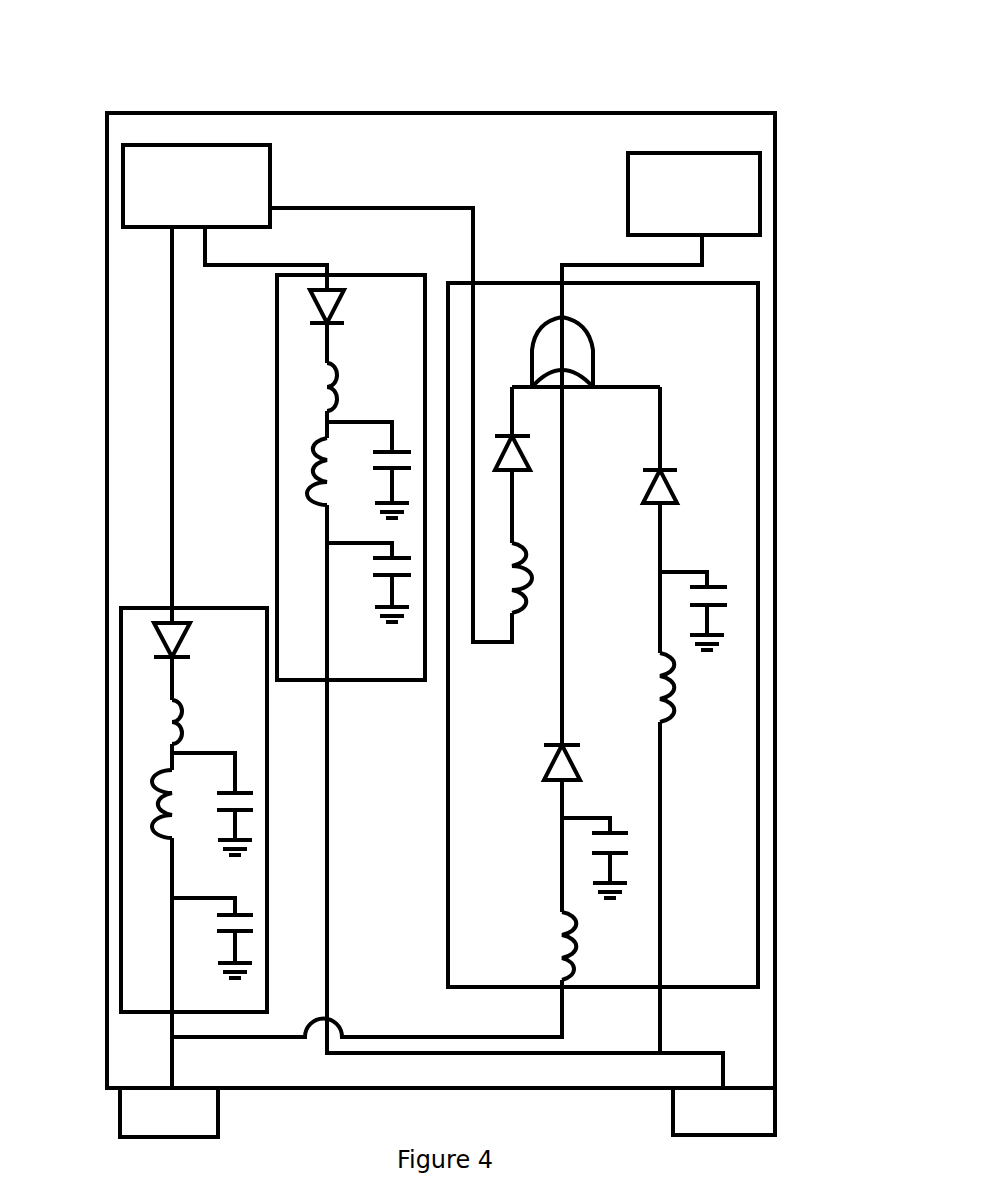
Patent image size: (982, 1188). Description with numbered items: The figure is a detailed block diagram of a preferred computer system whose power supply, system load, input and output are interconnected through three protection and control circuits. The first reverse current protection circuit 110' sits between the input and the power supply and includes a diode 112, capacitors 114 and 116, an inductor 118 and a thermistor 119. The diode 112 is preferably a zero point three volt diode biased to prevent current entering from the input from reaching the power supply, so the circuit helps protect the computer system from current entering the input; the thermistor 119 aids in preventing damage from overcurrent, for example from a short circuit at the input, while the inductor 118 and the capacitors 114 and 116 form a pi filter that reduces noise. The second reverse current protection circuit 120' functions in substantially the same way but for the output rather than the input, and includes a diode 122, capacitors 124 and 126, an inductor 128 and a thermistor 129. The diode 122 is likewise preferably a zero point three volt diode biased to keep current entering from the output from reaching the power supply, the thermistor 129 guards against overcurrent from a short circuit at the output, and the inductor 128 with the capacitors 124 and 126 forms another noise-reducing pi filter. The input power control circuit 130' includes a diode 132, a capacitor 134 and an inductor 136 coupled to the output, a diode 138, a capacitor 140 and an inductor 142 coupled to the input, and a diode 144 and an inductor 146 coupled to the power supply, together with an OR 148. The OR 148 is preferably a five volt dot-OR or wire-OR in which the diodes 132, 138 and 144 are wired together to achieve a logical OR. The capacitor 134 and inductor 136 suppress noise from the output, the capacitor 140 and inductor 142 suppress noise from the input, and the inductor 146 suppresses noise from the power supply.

The first reverse current protection circuit 110' is at (149, 820).
The diode 112 is at (157, 623).
The capacitor 114 is at (218, 793).
The capacitor 116 is at (218, 931).
The inductor 118 is at (137, 835).
The thermistor 119 is at (167, 700).
The second reverse current protection circuit 120' is at (384, 378).
The diode 122 is at (310, 290).
The capacitor 124 is at (375, 450).
The capacitor 126 is at (375, 573).
The inductor 128 is at (295, 505).
The thermistor 129 is at (327, 365).
The input power control circuit 130' is at (655, 607).
The diode 132 is at (677, 497).
The capacitor 134 is at (727, 600).
The inductor 136 is at (697, 710).
The diode 138 is at (578, 775).
The capacitor 140 is at (627, 853).
The inductor 142 is at (597, 968).
The diode 144 is at (530, 460).
The inductor 146 is at (548, 563).
The OR 148 is at (593, 350).